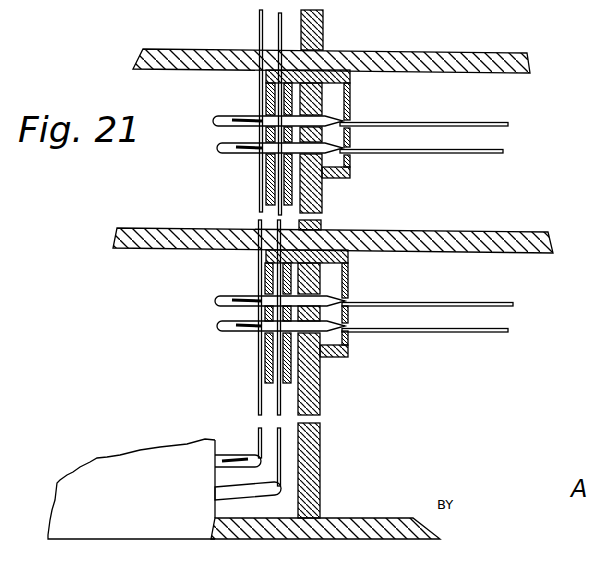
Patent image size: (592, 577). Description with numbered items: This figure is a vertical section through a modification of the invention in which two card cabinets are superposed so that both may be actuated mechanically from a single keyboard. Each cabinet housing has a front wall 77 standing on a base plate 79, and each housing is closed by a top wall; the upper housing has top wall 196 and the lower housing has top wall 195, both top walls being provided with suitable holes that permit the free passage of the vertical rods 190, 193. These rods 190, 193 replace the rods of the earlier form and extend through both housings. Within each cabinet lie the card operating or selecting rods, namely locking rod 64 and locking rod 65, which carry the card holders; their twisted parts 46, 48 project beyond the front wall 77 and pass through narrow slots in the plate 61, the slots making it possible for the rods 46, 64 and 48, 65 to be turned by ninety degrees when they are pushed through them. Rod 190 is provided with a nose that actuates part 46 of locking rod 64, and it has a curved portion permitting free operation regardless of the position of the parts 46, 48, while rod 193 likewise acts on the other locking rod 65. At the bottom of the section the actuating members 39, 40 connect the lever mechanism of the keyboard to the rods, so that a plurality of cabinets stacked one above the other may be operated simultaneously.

The top wall 196 is at (494, 58).
The top wall 195 is at (517, 240).
The rod 193 is at (276, 209).
The rod 190 is at (262, 266).
The plate 61 is at (350, 285).
The locking rod 64 is at (396, 122).
The locking rod 65 is at (399, 154).
The twisted part of locking rod 46 is at (213, 120).
The twisted part of locking rod 48 is at (217, 149).
The member 39 is at (229, 456).
The lower arm 40 is at (250, 496).
The front wall 77 is at (321, 453).
The base plate 79 is at (357, 518).